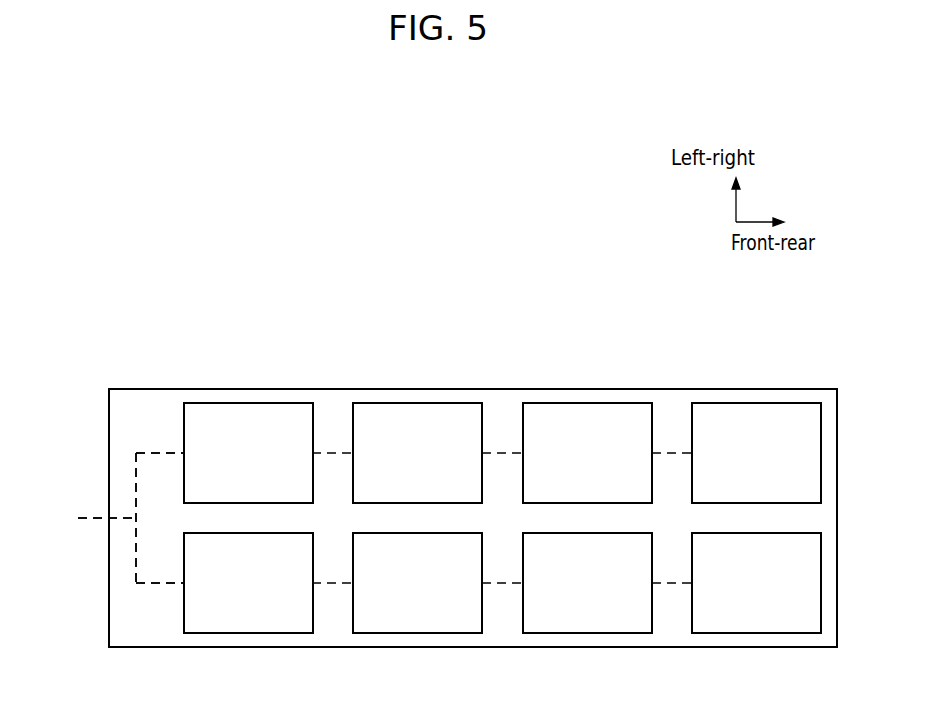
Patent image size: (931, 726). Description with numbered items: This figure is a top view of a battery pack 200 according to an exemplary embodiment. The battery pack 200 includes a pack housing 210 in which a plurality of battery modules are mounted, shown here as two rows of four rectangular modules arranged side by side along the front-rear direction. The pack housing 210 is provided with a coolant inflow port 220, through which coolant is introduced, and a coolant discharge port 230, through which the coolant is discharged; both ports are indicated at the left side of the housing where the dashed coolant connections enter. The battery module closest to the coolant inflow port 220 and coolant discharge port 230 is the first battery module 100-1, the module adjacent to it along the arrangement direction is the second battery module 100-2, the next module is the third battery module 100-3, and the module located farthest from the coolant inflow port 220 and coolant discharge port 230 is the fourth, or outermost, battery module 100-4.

The battery pack 200 is at (316, 206).
The pack housing 210 is at (458, 389).
The coolant inflow port 220 is at (92, 518).
The coolant discharge port 230 is at (92, 518).
The first battery module 100-1 is at (256, 403).
The second battery module 100-2 is at (382, 403).
The third battery module 100-3 is at (550, 403).
The fourth battery module 100-4 is at (710, 403).